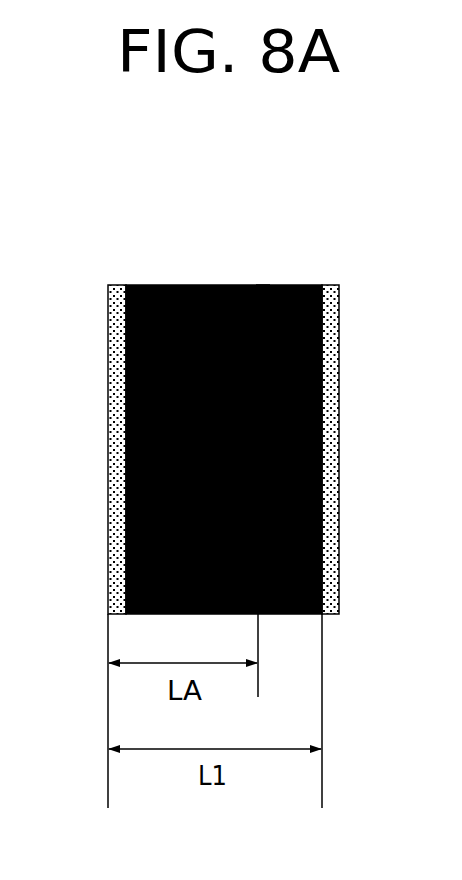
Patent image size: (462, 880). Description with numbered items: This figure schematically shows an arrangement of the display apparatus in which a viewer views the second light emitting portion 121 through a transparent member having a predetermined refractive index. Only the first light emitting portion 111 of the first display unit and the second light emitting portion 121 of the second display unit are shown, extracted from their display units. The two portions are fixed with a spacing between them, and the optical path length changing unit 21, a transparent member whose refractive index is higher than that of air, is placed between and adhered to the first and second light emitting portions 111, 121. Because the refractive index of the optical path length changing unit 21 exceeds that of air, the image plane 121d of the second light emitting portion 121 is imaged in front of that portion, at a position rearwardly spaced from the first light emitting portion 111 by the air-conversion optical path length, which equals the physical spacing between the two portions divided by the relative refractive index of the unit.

The optical path length changing unit 21 is at (203, 285).
The first light emitting portion 111 is at (117, 285).
The second light emitting portion 121 is at (327, 285).
The image plane 121d is at (263, 285).